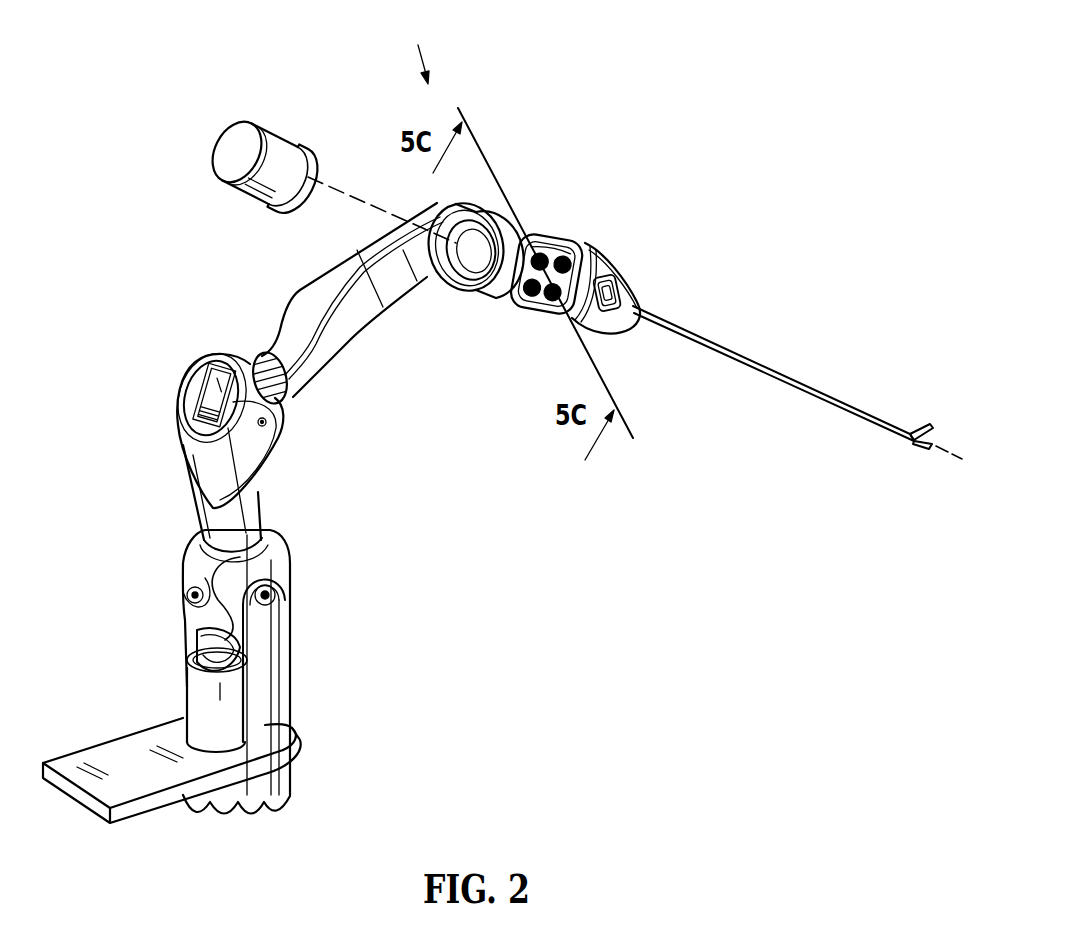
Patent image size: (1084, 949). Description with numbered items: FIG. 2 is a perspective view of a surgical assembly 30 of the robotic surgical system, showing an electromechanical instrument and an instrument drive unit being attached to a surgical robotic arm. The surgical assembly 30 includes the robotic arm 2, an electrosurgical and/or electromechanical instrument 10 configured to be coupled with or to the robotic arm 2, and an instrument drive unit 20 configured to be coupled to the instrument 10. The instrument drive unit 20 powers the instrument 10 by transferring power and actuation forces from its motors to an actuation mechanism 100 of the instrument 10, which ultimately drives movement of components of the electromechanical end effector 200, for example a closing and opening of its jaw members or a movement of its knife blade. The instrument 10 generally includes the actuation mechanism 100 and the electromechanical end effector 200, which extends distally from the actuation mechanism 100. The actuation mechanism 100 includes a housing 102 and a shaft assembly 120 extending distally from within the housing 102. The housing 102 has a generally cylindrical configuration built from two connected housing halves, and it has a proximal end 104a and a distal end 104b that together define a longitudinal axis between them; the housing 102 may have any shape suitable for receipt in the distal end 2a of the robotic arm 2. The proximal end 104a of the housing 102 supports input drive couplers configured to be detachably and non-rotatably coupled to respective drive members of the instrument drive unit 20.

The robotic arm 2 is at (182, 427).
The distal end of robotic arm 2a is at (498, 216).
The electrosurgical and/or electromechanical instrument 10 is at (735, 340).
The instrument drive unit 20 is at (266, 130).
The surgical assembly 30 is at (417, 51).
The actuation mechanism 100 is at (735, 340).
The housing 102 is at (609, 291).
The proximal end of housing 104a is at (554, 250).
The distal end of housing 104b is at (640, 299).
The shaft assembly 120 is at (703, 357).
The electromechanical end effector 200 is at (918, 412).